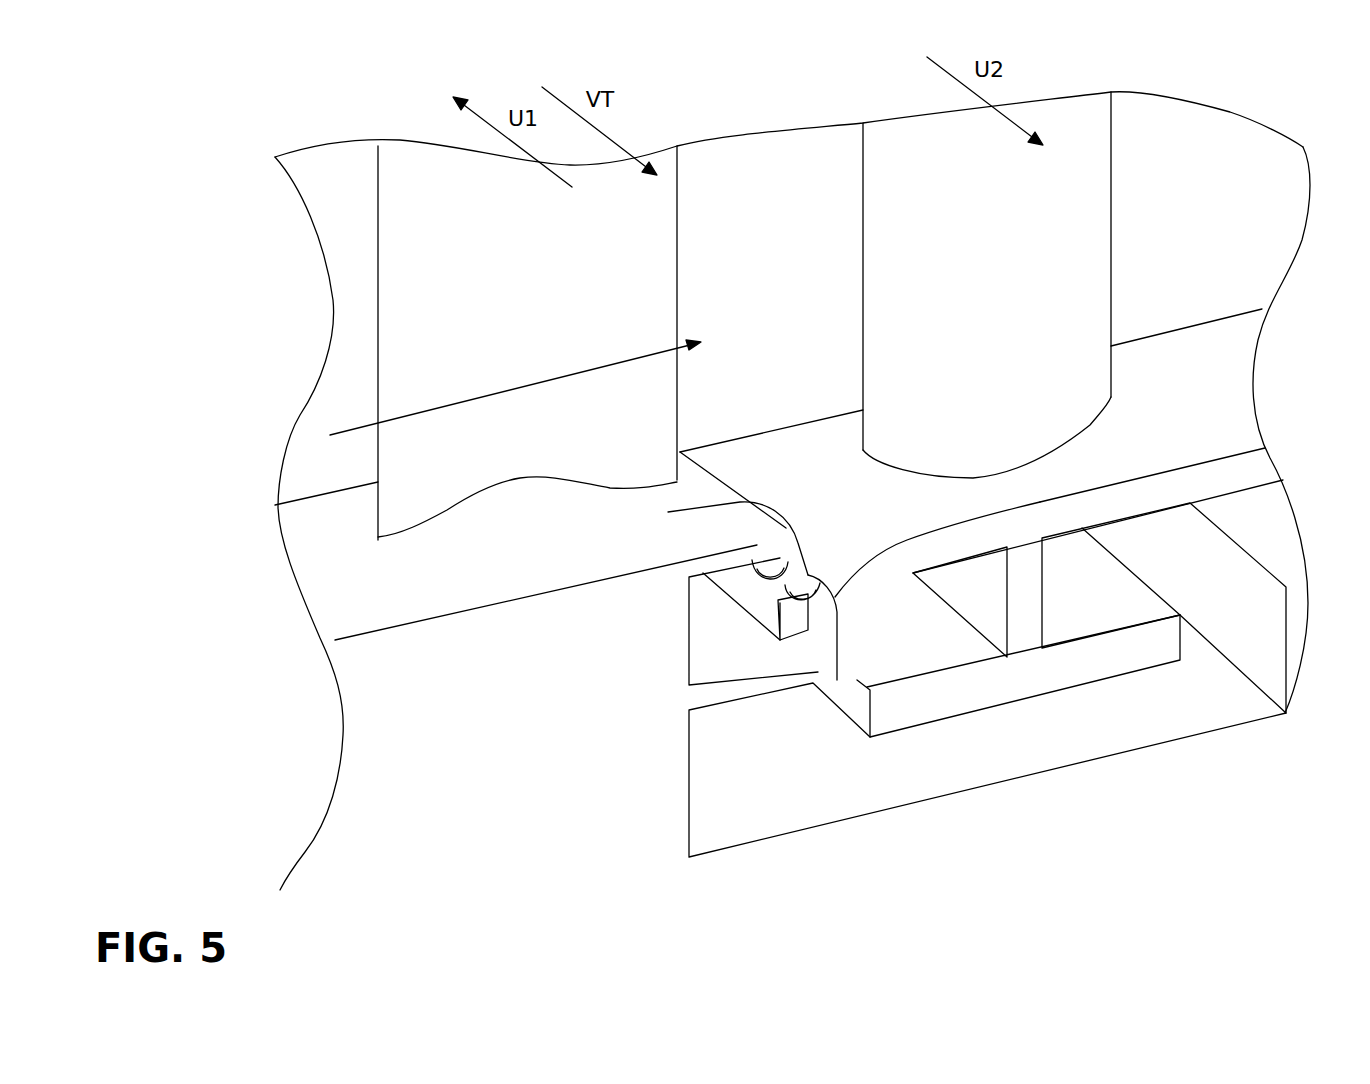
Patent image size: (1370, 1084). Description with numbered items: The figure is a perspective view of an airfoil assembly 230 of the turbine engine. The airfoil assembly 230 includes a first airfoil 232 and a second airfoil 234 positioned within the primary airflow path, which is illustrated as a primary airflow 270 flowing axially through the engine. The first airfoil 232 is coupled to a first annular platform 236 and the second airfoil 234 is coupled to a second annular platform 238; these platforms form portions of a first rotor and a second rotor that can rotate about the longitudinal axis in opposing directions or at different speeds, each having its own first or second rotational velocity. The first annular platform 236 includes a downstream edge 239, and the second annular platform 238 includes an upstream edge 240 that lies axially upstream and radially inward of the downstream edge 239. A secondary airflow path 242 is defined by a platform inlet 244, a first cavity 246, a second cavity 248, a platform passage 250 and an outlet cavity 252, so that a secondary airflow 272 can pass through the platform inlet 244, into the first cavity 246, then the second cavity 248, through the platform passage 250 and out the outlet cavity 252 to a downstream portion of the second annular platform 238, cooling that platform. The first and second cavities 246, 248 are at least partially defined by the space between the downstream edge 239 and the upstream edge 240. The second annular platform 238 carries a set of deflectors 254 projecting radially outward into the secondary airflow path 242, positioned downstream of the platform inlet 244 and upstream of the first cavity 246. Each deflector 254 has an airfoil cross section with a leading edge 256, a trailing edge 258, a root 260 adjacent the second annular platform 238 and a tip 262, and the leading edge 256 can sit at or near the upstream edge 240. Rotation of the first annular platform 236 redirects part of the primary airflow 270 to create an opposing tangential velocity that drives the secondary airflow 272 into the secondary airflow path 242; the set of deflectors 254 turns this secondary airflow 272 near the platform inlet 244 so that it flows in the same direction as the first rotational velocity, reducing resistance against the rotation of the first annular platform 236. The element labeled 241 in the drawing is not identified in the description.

The airfoil assembly 230 is at (131, 76).
The first airfoil 232 is at (370, 285).
The second airfoil 234 is at (1120, 231).
The first annular platform 236 is at (449, 624).
The second annular platform 238 is at (1126, 466).
The downstream edge 239 is at (718, 480).
The upstream edge 240 is at (778, 601).
The pin head 241 is at (740, 567).
The secondary airflow path 242 is at (1076, 771).
The platform inlet 244 is at (758, 483).
The first cavity 246 is at (700, 663).
The second cavity 248 is at (895, 639).
The platform passage 250 is at (933, 771).
The outlet cavity 252 is at (1145, 561).
The set of deflectors 254 is at (807, 553).
The leading edge 256 is at (780, 560).
The trailing edge 258 is at (810, 603).
The root 260 is at (778, 608).
The tip 262 is at (817, 667).
The primary airflow 270 is at (348, 425).
The secondary airflow 272 is at (721, 485).